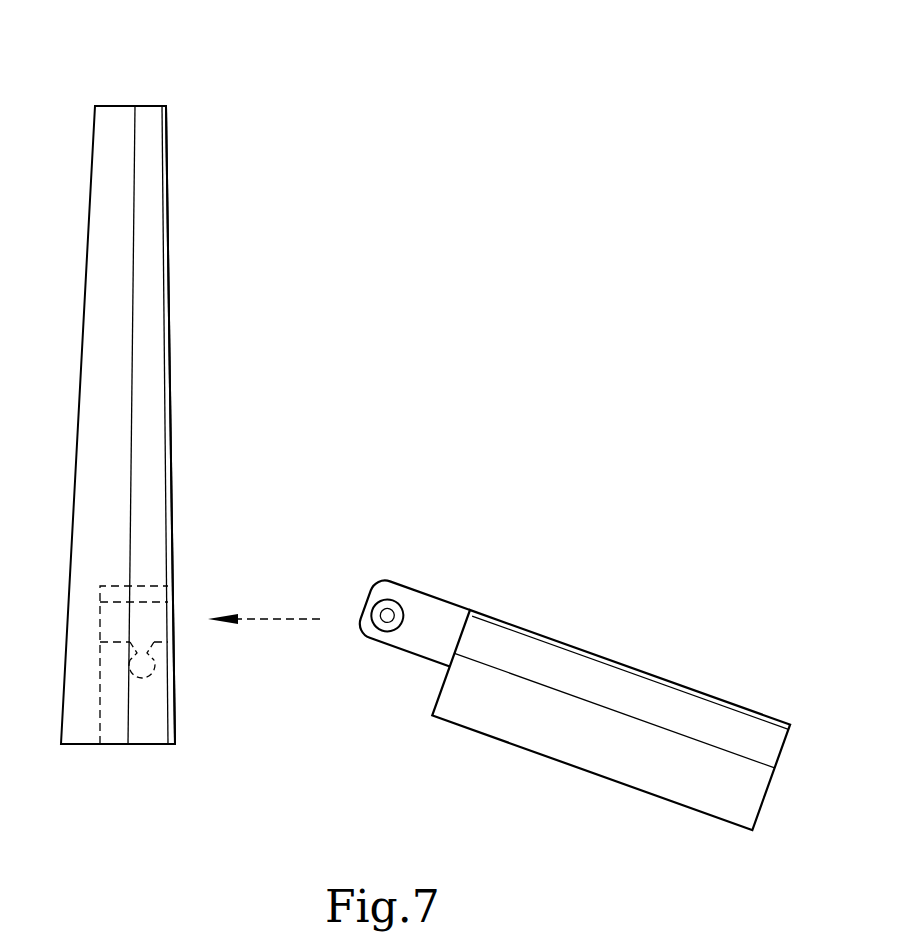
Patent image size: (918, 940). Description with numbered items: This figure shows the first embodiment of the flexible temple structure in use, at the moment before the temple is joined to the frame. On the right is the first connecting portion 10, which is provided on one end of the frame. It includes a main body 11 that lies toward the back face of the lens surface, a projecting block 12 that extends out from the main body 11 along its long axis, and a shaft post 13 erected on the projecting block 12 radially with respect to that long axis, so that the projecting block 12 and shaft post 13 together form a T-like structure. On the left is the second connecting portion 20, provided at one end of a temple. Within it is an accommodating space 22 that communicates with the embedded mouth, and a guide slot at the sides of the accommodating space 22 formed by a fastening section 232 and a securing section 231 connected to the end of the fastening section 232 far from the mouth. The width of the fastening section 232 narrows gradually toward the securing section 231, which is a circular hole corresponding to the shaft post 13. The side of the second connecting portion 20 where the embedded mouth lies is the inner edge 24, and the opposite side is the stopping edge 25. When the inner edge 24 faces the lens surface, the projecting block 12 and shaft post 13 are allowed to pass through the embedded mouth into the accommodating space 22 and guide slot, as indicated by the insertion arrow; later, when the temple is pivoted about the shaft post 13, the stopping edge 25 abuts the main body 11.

The first connecting portion 10 is at (608, 656).
The main body 11 is at (537, 733).
The projecting block 12 is at (429, 610).
The shaft post 13 is at (388, 612).
The second connecting portion 20 is at (139, 104).
The accommodating space 22 is at (157, 613).
The inner edge 24 is at (170, 352).
The stopping edge 25 is at (79, 745).
The securing section 231 is at (152, 648).
The fastening section 232 is at (150, 667).